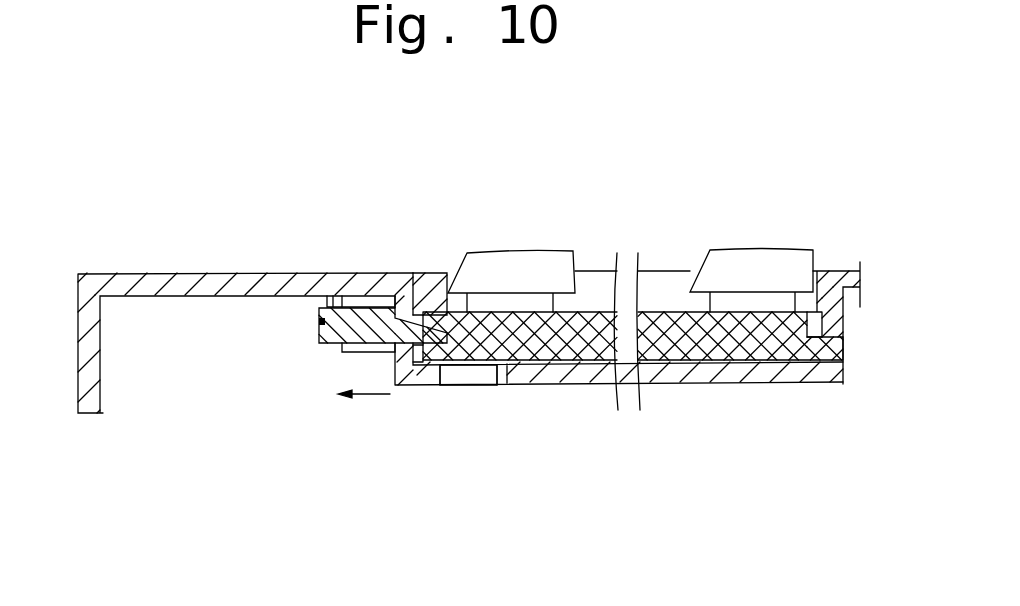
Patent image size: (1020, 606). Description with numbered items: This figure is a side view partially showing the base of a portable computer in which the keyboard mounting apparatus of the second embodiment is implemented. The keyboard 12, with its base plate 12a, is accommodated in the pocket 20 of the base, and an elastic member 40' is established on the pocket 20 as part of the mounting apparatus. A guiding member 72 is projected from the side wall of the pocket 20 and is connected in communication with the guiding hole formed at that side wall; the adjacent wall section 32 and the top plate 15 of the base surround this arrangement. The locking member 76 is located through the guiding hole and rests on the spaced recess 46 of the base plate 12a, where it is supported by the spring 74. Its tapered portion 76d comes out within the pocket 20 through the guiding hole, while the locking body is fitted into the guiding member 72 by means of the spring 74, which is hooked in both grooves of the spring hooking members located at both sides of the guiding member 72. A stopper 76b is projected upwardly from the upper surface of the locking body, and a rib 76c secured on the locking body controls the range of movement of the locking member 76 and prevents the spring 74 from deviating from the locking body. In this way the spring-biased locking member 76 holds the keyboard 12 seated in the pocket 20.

The housing top plate 15 is at (252, 272).
The stopper 76b is at (323, 272).
The guiding member 72 is at (353, 272).
The tapered portion 76d is at (413, 272).
The connector 46 is at (440, 317).
The base plate 12a is at (598, 312).
The keyboard 12 is at (678, 238).
The pocket 20 is at (813, 303).
The rib 76c is at (318, 308).
The spring 74 is at (318, 326).
The locking member 76 is at (335, 346).
The base plate 32 is at (400, 387).
The elastic member 40' is at (468, 417).